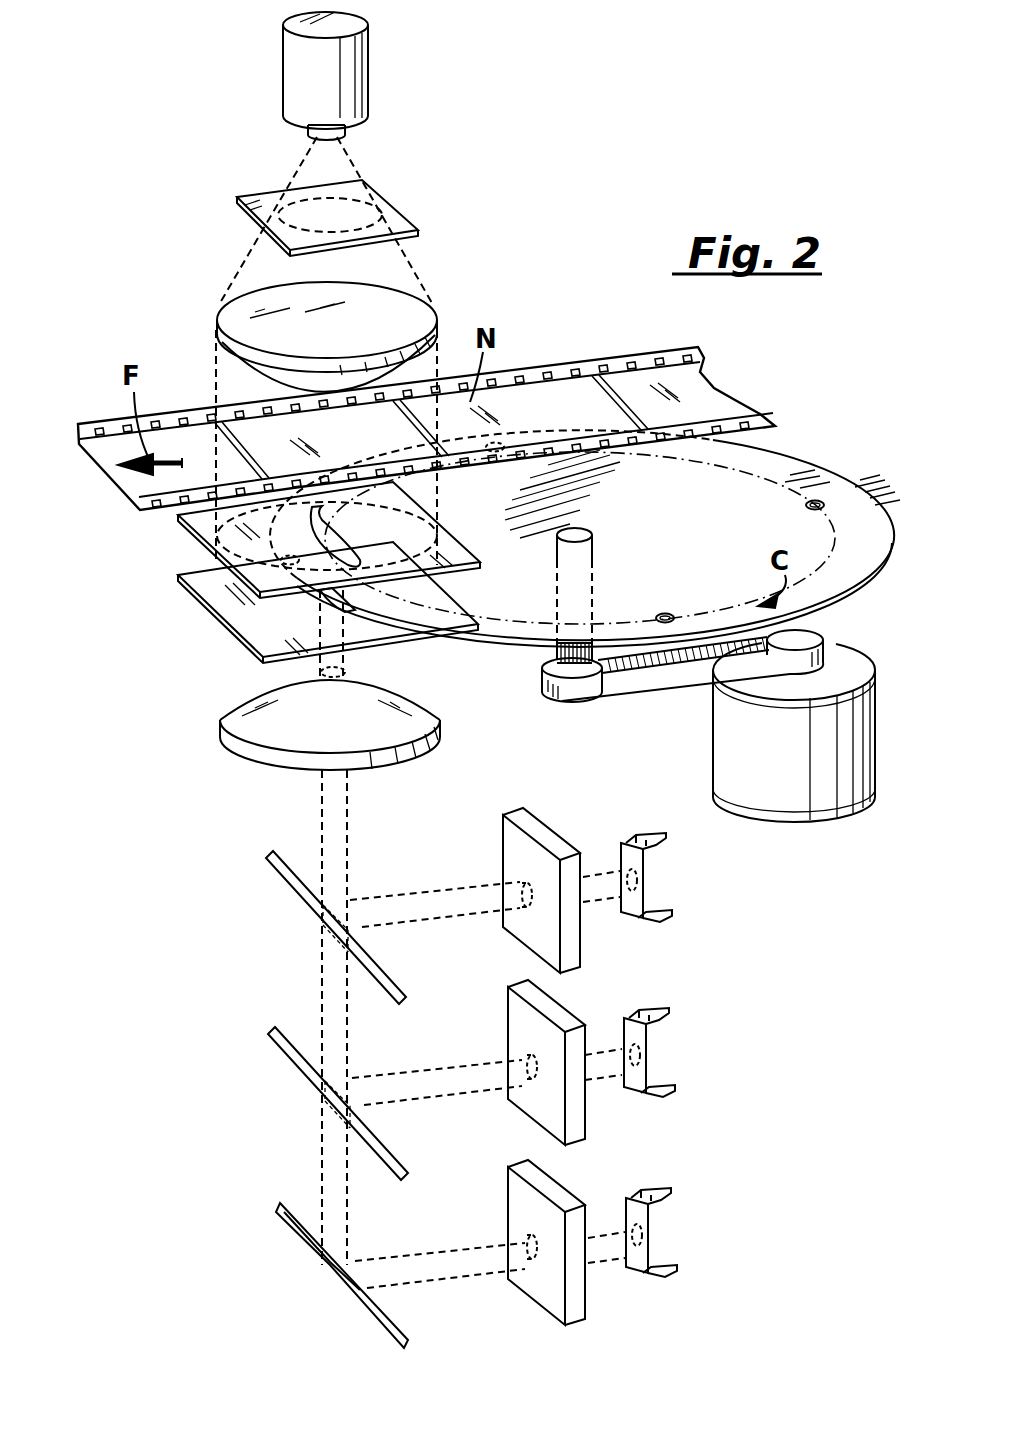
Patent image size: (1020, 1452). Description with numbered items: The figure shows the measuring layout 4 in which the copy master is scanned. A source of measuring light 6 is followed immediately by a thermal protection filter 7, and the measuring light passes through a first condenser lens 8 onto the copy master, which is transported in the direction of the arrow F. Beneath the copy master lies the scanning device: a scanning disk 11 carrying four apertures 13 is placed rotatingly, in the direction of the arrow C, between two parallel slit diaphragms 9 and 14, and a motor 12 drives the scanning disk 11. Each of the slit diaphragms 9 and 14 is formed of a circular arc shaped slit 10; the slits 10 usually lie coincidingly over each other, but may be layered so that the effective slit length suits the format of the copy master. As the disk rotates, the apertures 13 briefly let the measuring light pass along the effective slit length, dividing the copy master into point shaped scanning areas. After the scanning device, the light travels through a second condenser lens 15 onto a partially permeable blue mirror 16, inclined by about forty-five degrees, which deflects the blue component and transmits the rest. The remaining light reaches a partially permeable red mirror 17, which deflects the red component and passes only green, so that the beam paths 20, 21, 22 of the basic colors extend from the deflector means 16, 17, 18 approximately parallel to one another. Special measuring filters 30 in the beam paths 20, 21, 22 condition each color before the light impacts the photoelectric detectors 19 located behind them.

The measuring apparatus 4 is at (542, 336).
The source of measuring light 6 is at (365, 85).
The thermal protection filter 7 is at (395, 218).
The first condenser lens 8 is at (420, 305).
The slit diaphragm 9 is at (176, 520).
The circular arc shaped slit 10 is at (340, 524).
The scanning disk 11 is at (785, 468).
The motor 12 is at (818, 800).
The aperture 13 is at (820, 500).
The slit diaphragm 14 is at (178, 580).
The second condenser lens 15 is at (220, 722).
The partially permeable blue mirror 16 is at (285, 878).
The partially permeable red mirror 17 is at (290, 1055).
The deflector means 18 is at (292, 1233).
The photoelectric detector 19 is at (650, 880).
The beam path 20 is at (408, 900).
The beam path 21 is at (420, 1078).
The beam path 22 is at (440, 1262).
The measuring filter 30 is at (500, 838).